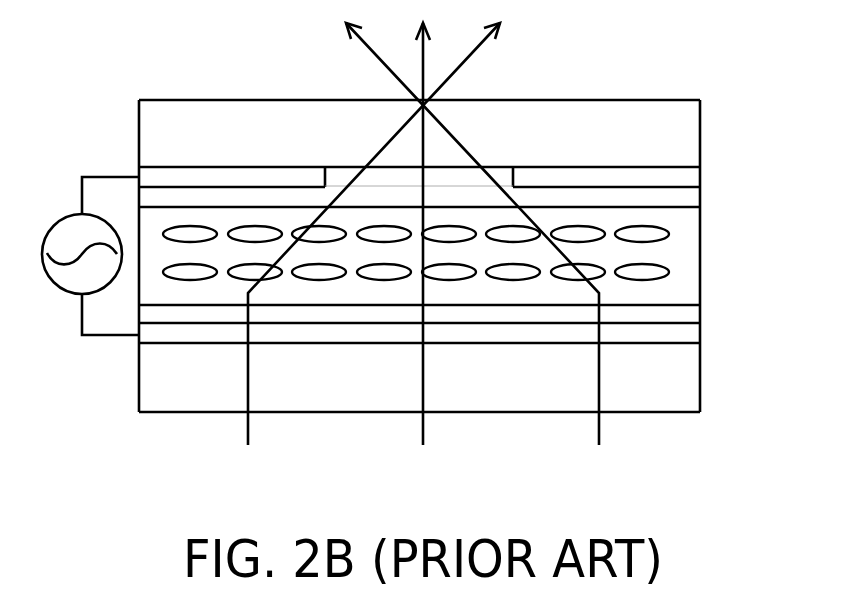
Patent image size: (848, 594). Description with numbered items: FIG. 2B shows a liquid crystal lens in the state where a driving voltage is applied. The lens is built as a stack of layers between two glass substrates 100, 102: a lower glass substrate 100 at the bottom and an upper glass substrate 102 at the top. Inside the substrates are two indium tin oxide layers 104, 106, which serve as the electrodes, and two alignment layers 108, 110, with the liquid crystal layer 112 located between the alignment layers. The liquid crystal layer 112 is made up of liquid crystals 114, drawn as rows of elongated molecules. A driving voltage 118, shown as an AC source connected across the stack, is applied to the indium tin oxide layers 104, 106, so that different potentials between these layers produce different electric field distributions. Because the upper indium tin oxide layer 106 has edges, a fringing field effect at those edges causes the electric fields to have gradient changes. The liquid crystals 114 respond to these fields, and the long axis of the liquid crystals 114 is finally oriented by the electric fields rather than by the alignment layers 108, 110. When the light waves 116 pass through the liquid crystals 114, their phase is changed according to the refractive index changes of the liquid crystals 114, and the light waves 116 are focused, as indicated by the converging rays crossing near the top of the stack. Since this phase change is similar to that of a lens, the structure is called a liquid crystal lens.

The glass substrate 100 is at (675, 390).
The glass substrate 102 is at (670, 134).
The indium tin oxide layer 104 is at (670, 337).
The indium tin oxide layer 106 is at (670, 177).
The alignment layer 108 is at (670, 317).
The alignment layer 110 is at (670, 198).
The liquid crystal layer 112 is at (677, 255).
The liquid crystals 114 is at (195, 234).
The light waves 116 is at (598, 455).
The driving voltage 118 is at (67, 213).